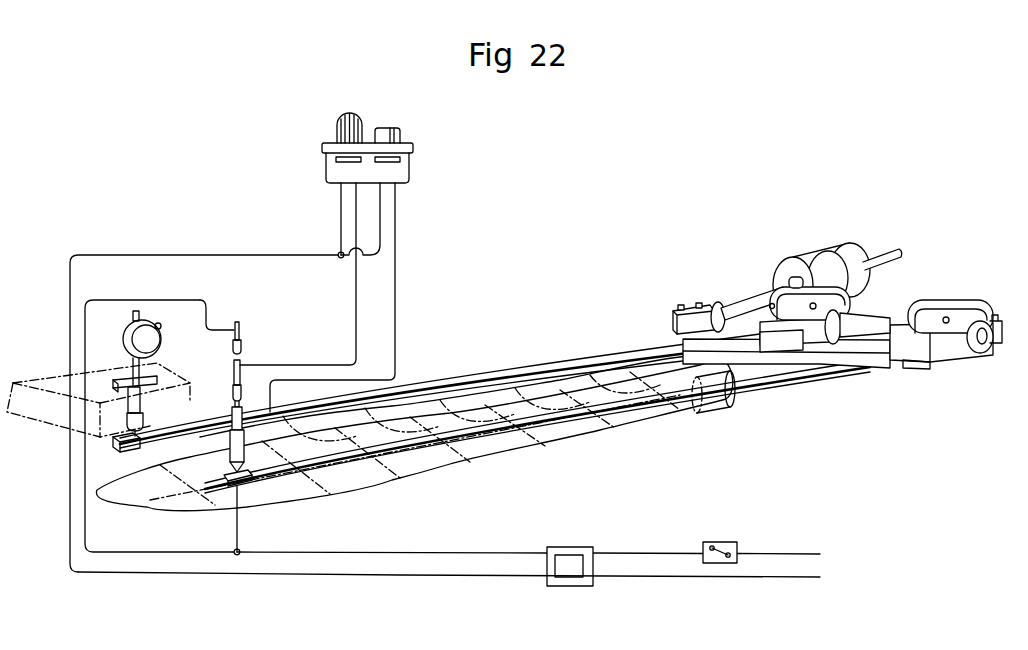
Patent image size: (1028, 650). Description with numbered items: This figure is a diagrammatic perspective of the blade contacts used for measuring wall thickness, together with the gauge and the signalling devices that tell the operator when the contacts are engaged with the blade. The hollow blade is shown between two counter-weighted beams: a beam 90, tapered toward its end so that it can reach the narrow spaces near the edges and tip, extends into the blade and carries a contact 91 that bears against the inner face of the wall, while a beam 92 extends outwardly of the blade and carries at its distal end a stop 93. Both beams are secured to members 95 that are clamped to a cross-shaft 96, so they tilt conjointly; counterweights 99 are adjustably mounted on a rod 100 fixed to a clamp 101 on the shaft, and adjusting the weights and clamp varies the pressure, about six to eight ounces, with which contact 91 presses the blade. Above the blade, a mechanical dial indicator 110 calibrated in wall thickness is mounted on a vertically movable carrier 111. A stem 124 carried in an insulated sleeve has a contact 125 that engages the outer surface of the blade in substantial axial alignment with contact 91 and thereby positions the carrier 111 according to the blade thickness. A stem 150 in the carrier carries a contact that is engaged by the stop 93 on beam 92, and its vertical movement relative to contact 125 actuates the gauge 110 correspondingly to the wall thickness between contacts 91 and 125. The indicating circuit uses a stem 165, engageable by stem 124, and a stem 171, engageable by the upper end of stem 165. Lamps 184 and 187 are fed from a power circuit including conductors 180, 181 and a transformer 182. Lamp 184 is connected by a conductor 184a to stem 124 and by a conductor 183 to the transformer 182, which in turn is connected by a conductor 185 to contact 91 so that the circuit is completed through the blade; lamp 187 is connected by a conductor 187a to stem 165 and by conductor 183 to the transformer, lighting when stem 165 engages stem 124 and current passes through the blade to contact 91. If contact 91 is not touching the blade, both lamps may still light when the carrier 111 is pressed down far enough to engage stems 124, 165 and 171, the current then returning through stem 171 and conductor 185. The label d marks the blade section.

The conductor 183 is at (160, 255).
The lamp 187 is at (338, 128).
The lamp 184 is at (400, 134).
The conductor 187a is at (356, 316).
The conductor 184a is at (396, 284).
The carrier 111 is at (45, 390).
The mechanical dial indicator 110 is at (150, 340).
The stem 150 is at (134, 405).
The stop 93 is at (118, 445).
The beam 92 is at (501, 379).
The beam 90 is at (627, 400).
The blade (workpiece) d is at (517, 432).
The stem 171 is at (241, 338).
The stem 165 is at (234, 378).
The stem 124 is at (232, 414).
The contact 125 is at (246, 482).
The contact 91 is at (235, 481).
The counterweights 99 is at (838, 263).
The clamp 101 is at (712, 300).
The rod 100 is at (757, 297).
The members 95 is at (803, 300).
The cross-shaft 96 is at (872, 326).
The conductor 185 is at (480, 553).
The transformer 182 is at (558, 560).
The conductor 181 is at (648, 553).
The conductor 180 is at (658, 577).